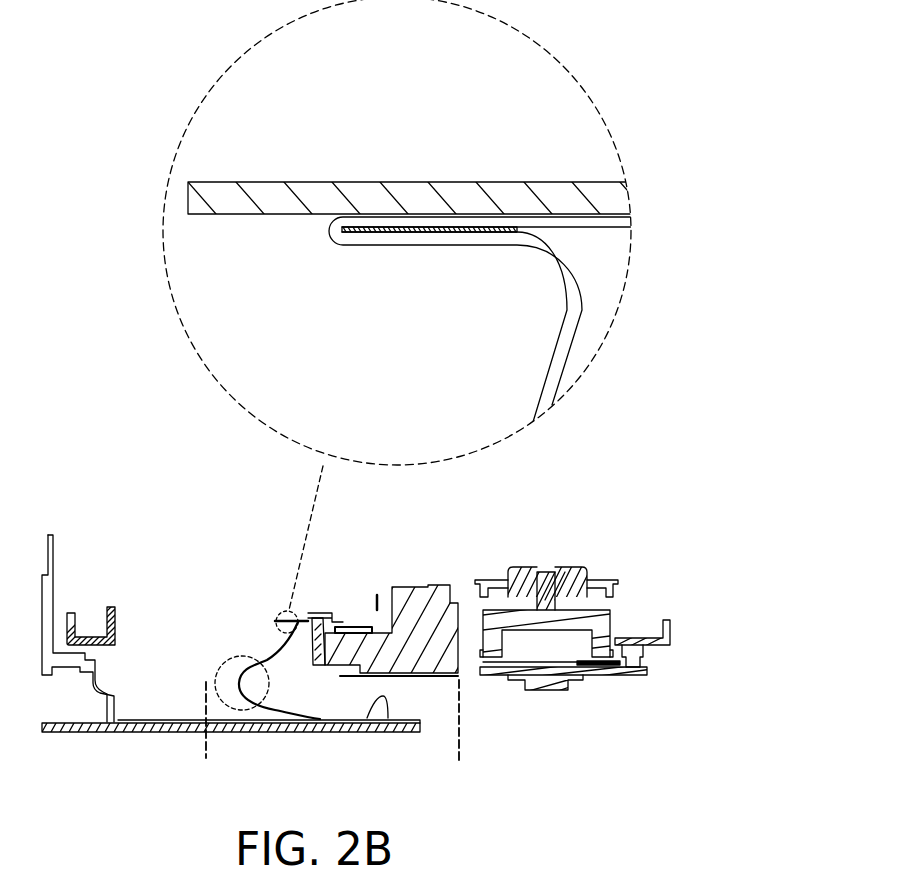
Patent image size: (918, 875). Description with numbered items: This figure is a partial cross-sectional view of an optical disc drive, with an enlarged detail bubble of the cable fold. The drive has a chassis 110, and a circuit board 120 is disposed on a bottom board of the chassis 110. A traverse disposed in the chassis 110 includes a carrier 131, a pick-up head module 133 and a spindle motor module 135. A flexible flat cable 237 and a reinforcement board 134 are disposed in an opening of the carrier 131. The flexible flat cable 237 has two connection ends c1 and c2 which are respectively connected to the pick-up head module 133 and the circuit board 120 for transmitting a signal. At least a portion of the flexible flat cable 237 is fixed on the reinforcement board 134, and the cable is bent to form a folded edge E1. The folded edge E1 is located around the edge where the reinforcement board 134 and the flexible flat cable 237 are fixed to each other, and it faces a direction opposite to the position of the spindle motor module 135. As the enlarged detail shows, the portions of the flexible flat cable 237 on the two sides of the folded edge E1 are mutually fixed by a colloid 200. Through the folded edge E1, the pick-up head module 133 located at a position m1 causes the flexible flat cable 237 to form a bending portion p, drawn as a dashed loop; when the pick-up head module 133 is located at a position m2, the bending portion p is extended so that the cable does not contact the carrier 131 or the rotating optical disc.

The chassis 110 is at (52, 532).
The circuit board 120 is at (138, 733).
The carrier 131 is at (73, 612).
The pick-up head module 133 is at (433, 586).
The reinforcement board 134 is at (203, 188).
The spindle motor module 135 is at (602, 541).
The colloid 200 is at (437, 232).
The flexible flat cable 237 is at (578, 317).
The folded edge E1 is at (312, 233).
The bending portion p is at (222, 665).
The connection end c1 is at (323, 615).
The connection end c2 is at (388, 718).
The position m1 is at (465, 737).
The position m2 is at (208, 737).